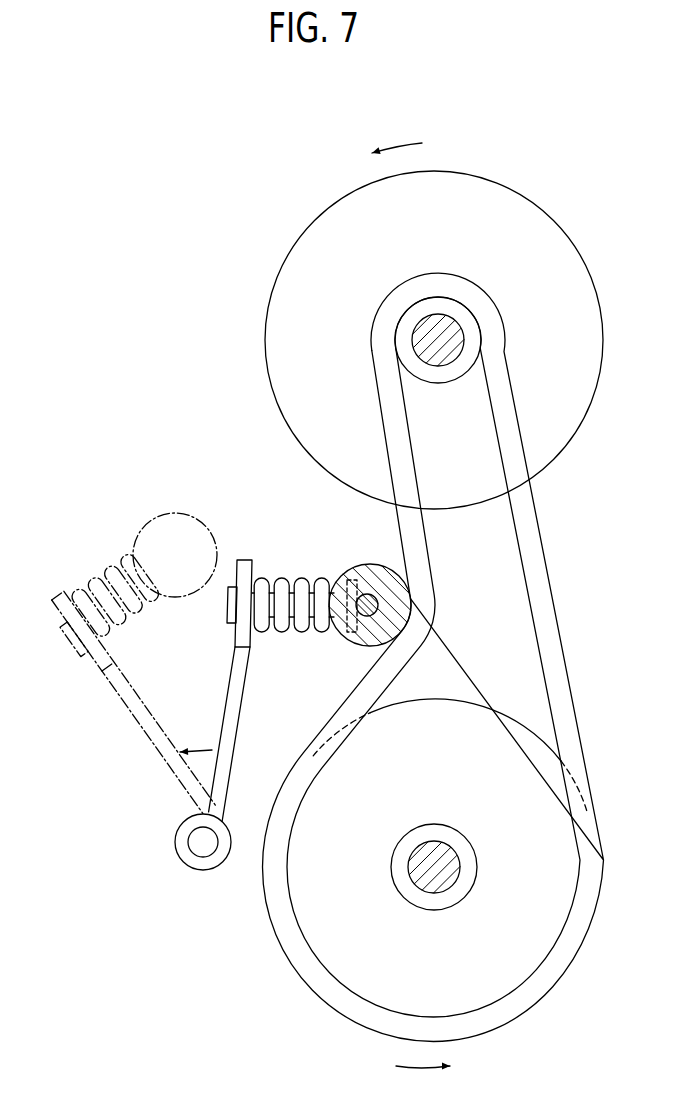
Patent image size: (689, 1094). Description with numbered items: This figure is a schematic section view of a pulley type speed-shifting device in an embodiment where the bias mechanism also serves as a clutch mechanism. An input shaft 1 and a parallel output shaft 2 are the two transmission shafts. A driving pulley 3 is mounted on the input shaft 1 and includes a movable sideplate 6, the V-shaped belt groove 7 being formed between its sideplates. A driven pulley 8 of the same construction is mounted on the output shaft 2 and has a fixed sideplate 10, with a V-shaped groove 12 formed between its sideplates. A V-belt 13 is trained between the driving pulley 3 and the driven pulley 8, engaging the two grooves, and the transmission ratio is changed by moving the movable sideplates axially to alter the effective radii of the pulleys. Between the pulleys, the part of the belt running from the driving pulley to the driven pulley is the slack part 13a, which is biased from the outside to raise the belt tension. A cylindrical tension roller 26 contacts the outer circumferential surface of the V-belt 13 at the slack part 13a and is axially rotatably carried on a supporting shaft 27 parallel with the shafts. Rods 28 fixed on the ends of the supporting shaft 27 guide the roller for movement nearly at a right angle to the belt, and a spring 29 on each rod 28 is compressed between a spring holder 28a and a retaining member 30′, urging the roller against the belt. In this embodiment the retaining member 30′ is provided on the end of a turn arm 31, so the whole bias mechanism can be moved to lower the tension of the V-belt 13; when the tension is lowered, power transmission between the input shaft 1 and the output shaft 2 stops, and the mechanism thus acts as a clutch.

The input shaft 1 is at (412, 330).
The output shaft 2 is at (447, 893).
The driving pulley 3 is at (265, 345).
The movable sideplate 6 is at (566, 233).
The V-shaped belt groove 7 is at (444, 182).
The driven pulley 8 is at (600, 840).
The fixed sideplate 10 is at (507, 714).
The V-shaped groove 12 is at (333, 957).
The V-belt 13 is at (553, 580).
The slack part 13a is at (397, 518).
The tension roller 26 is at (150, 515).
The supporting shaft 27 is at (370, 618).
The rod 28 is at (105, 588).
The spring holder 28a is at (352, 580).
The spring 29 is at (279, 634).
The retaining member 30′ is at (228, 626).
The turn arm 31 is at (135, 727).